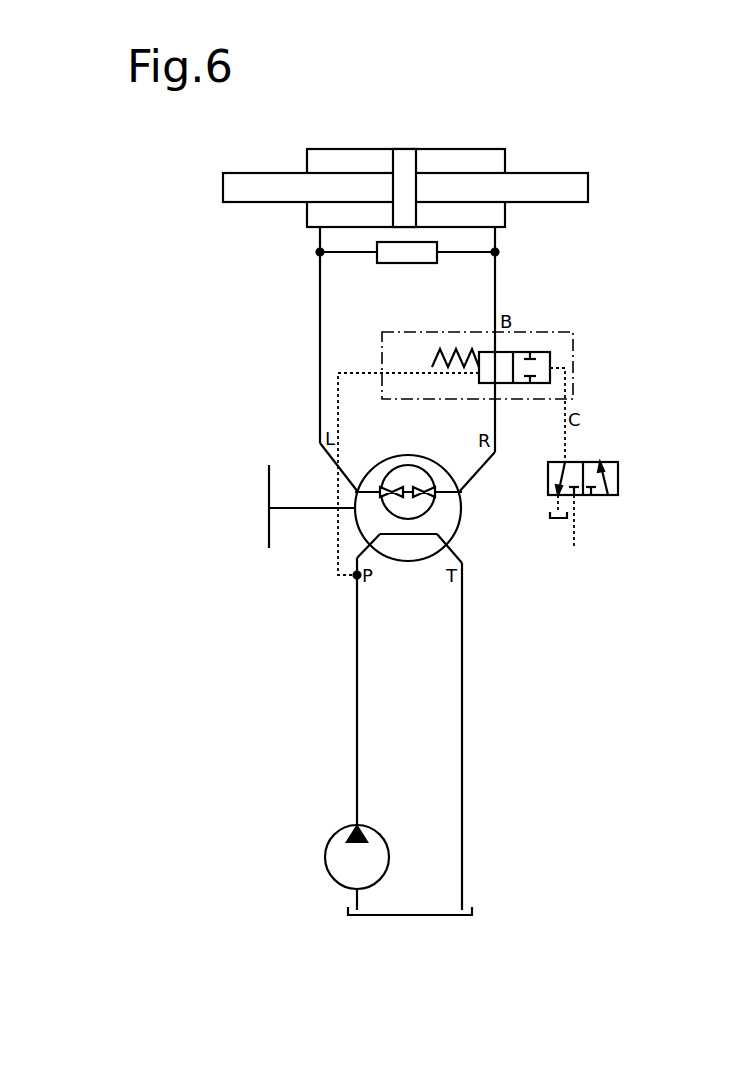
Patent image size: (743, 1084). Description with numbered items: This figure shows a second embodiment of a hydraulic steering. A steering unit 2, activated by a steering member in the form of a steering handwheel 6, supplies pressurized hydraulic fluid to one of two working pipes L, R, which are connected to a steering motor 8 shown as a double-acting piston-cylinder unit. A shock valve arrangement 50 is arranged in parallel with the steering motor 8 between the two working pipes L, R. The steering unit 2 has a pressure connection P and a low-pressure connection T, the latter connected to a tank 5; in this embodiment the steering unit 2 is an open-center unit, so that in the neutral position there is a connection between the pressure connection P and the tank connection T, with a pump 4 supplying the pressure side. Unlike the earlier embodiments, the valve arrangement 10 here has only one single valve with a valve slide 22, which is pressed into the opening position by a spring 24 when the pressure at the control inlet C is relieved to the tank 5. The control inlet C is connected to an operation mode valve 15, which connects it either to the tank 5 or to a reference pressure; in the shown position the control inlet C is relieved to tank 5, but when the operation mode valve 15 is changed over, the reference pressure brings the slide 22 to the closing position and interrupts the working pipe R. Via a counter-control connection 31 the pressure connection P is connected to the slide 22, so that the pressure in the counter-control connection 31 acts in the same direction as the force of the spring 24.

The steering motor 8 is at (479, 162).
The shock valve arrangement 50 is at (393, 253).
The valve arrangement 10 is at (575, 347).
The spring 24 is at (433, 362).
The valve slide 22 is at (527, 345).
The counter-control connection 31 is at (338, 405).
The steering unit 2 is at (358, 530).
The steering handwheel 6 is at (263, 488).
The operation mode valve 15 is at (622, 470).
The pump 4 is at (325, 867).
The tank 5 is at (555, 522).